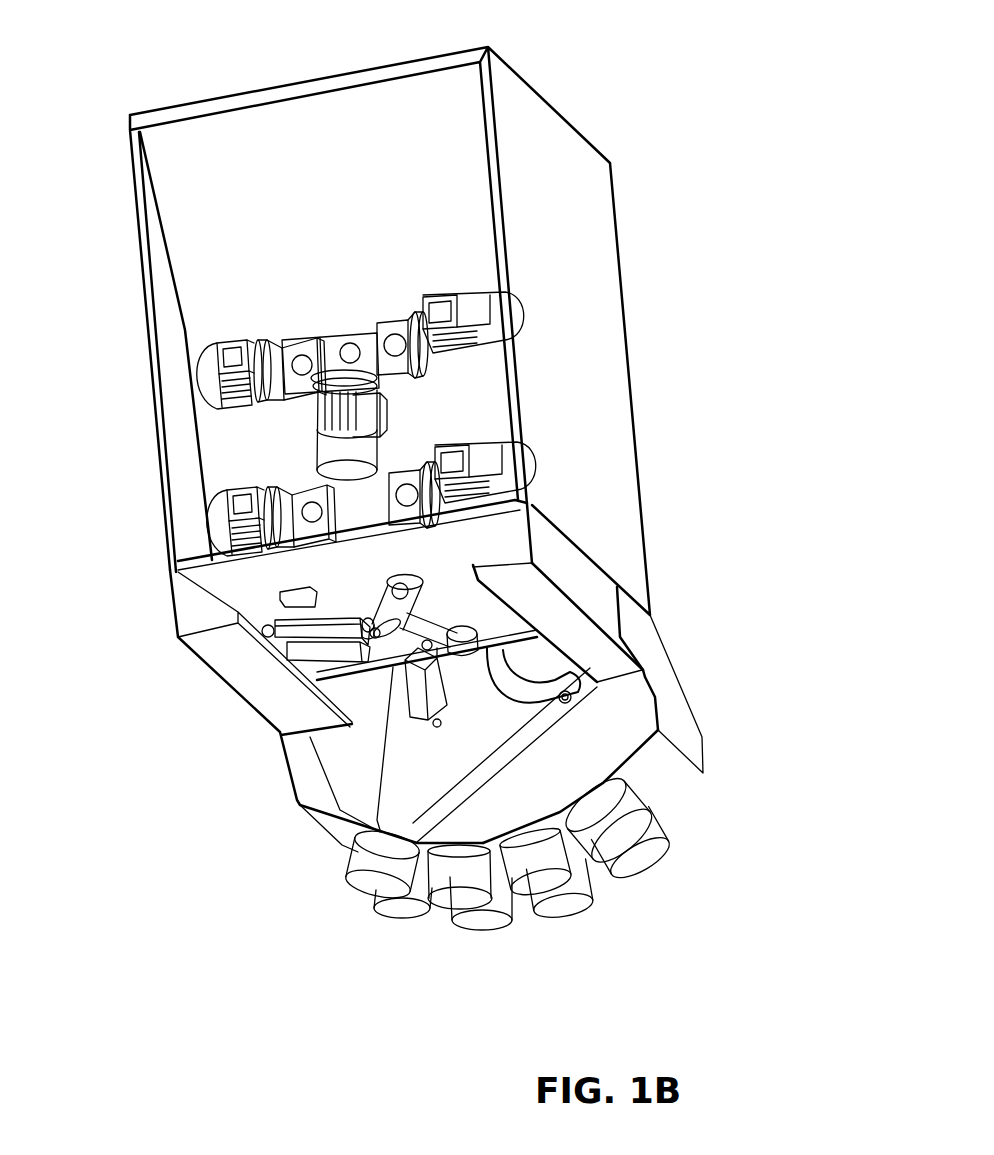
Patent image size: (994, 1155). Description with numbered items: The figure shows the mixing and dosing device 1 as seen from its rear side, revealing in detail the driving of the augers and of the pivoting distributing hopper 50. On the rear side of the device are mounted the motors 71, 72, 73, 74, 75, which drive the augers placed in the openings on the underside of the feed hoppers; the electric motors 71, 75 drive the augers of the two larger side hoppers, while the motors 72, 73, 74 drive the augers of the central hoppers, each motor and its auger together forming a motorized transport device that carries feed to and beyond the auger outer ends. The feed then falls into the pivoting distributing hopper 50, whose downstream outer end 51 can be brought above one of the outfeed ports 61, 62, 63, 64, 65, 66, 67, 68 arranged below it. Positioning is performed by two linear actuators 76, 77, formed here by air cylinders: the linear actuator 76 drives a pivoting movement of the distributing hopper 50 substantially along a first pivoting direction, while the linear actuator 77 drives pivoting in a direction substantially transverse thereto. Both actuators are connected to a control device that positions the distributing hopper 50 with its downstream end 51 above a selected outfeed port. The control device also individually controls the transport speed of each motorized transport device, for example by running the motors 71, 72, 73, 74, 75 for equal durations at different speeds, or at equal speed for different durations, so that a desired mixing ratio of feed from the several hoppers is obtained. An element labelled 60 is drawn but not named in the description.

The mixing and dosing device 1 is at (112, 69).
The pivoting distributing hopper 50 is at (407, 787).
The downstream outer end 51 is at (395, 818).
The bracket 60 is at (677, 727).
The outfeed port 61 is at (640, 866).
The outfeed port 62 is at (570, 908).
The outfeed port 63 is at (477, 928).
The outfeed port 64 is at (402, 912).
The outfeed port 65 is at (627, 832).
The outfeed port 66 is at (530, 888).
The outfeed port 67 is at (443, 900).
The outfeed port 68 is at (350, 880).
The electric motor 71 is at (407, 485).
The motor 72 is at (395, 338).
The motor 73 is at (349, 343).
The motor 74 is at (302, 355).
The electric motor 75 is at (312, 502).
The linear actuator 76 is at (310, 628).
The linear actuator 77 is at (417, 695).